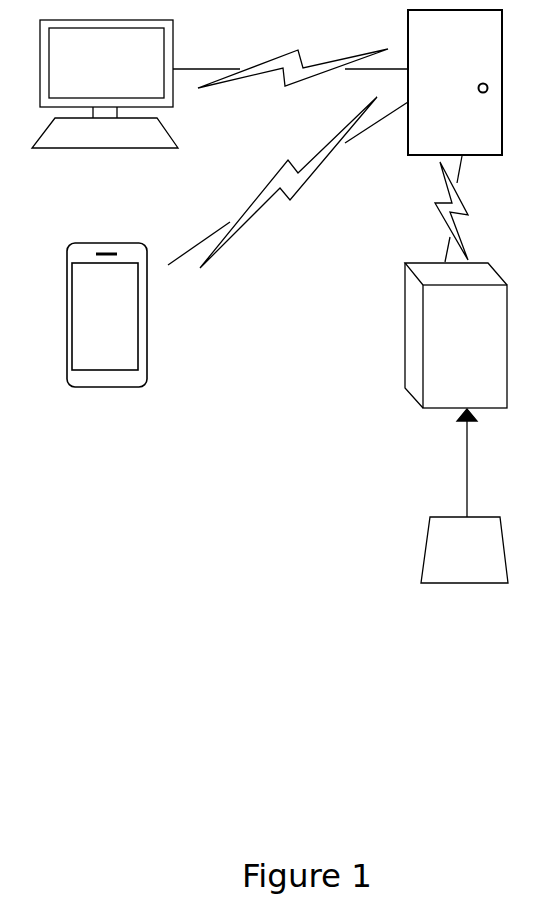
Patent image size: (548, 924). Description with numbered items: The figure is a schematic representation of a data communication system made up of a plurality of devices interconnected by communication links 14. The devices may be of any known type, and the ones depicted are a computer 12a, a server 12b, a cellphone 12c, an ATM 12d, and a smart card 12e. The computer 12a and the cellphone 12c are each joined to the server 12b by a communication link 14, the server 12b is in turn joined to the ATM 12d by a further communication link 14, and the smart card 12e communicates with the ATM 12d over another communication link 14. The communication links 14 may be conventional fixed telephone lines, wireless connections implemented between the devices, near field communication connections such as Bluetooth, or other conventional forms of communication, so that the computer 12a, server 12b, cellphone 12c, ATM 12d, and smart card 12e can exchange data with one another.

The computer 12a is at (105, 84).
The server 12b is at (455, 82).
The cellphone 12c is at (107, 315).
The ATM 12d is at (456, 335).
The smart card 12e is at (464, 550).
The communication links 14 is at (335, 263).